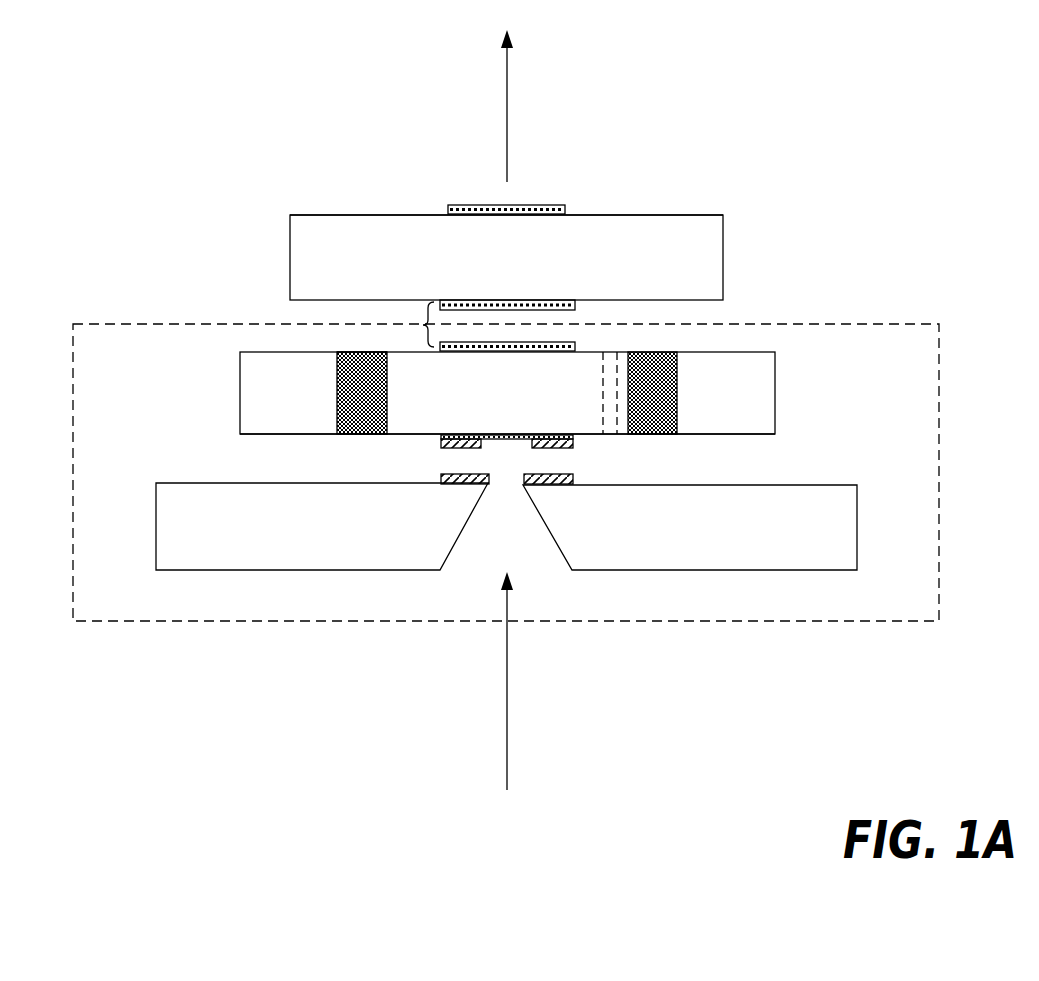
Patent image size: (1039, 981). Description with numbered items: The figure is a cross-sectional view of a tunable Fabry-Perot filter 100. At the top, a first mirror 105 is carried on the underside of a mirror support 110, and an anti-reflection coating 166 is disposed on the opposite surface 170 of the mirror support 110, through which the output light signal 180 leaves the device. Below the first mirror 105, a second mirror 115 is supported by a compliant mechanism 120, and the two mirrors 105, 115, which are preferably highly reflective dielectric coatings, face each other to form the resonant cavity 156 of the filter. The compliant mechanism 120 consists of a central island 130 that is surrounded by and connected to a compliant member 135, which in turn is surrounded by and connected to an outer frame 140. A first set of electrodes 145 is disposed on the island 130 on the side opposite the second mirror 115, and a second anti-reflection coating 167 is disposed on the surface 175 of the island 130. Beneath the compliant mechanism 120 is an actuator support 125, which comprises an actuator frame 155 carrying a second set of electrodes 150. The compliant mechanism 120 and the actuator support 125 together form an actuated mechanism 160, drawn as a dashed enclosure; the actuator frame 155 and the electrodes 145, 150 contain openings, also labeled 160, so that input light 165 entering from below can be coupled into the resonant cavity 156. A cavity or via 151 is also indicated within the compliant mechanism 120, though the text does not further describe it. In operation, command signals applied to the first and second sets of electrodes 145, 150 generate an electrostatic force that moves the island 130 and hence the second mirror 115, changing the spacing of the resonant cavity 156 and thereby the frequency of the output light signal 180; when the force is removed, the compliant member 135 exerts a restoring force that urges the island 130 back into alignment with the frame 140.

The tunable Fabry-Perot filter 100 is at (812, 127).
The first mirror 105 is at (575, 305).
The mirror support 110 is at (713, 253).
The second mirror 115 is at (575, 345).
The compliant mechanism 120 is at (510, 397).
The actuator support 125 is at (492, 540).
The island 130 is at (352, 356).
The compliant member 135 is at (345, 433).
The frame 140 is at (253, 403).
The first set of electrodes 145 is at (440, 443).
The second set of electrodes 150 is at (440, 478).
The via 151 is at (673, 415).
The actuator frame 155 is at (195, 560).
The resonant cavity 156 is at (421, 330).
The actuated mechanism 160 is at (940, 472).
The input light 165 is at (507, 725).
The anti-reflection coating 166 is at (546, 205).
The anti-reflection coating 167 is at (510, 435).
The surface of the mirror support 170 is at (657, 213).
The surface of the island 175 is at (404, 433).
The output light signal 180 is at (507, 132).